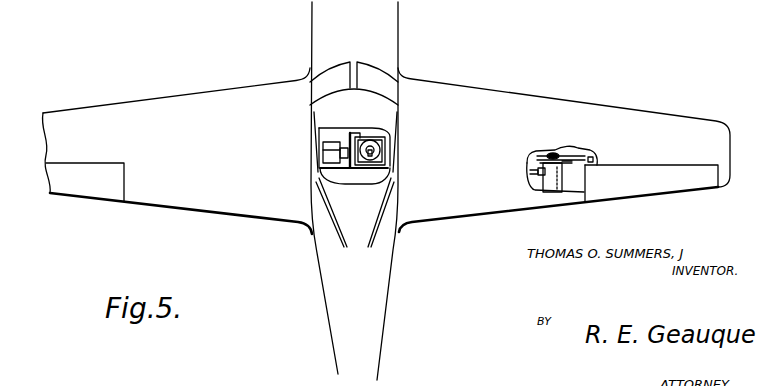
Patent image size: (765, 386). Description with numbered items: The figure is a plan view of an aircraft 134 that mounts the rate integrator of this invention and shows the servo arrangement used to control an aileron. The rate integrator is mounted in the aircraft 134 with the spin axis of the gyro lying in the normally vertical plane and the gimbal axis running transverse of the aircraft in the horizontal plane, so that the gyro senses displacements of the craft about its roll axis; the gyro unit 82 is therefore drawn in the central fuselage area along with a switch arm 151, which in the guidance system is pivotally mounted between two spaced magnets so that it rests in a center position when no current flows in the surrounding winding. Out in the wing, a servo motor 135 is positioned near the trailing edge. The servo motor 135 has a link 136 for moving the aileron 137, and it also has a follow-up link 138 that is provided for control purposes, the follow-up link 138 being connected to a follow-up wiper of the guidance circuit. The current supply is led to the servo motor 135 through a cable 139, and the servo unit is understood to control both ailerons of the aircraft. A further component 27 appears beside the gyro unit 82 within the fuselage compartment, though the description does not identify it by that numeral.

The servo motor 27 is at (374, 141).
The gyroscope unit 82 is at (326, 152).
The switch arm 151 is at (351, 141).
The aircraft 134 is at (398, 50).
The servo motor 135 is at (557, 190).
The link 136 is at (590, 150).
The aileron 137 is at (664, 187).
The follow-up link 138 is at (540, 155).
The cable 139 is at (530, 172).